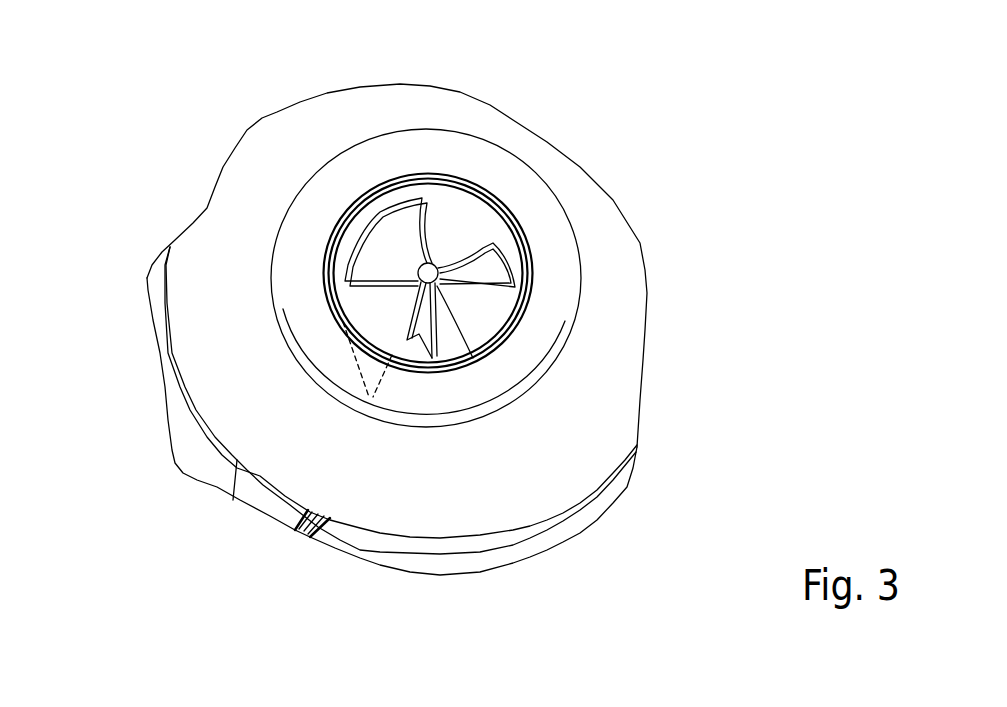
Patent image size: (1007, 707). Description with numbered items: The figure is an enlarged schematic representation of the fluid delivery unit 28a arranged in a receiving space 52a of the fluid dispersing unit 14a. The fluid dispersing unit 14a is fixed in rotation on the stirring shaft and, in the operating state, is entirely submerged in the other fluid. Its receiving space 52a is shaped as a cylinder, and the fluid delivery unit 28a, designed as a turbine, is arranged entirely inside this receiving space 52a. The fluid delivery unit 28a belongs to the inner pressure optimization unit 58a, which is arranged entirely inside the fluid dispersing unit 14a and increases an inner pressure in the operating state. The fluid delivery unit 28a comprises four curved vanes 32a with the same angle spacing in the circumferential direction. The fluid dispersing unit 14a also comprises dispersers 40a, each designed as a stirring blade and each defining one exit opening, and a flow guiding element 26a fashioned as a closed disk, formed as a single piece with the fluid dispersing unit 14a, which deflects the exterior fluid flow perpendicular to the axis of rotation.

The fluid dispersing unit 14a is at (170, 177).
The flow guiding element 26a is at (245, 232).
The fluid delivery unit 28a is at (442, 181).
The vanes 32a is at (386, 228).
The dispersers 40a is at (250, 487).
The receiving space 52a is at (473, 325).
The inner pressure optimization unit 58a is at (491, 188).